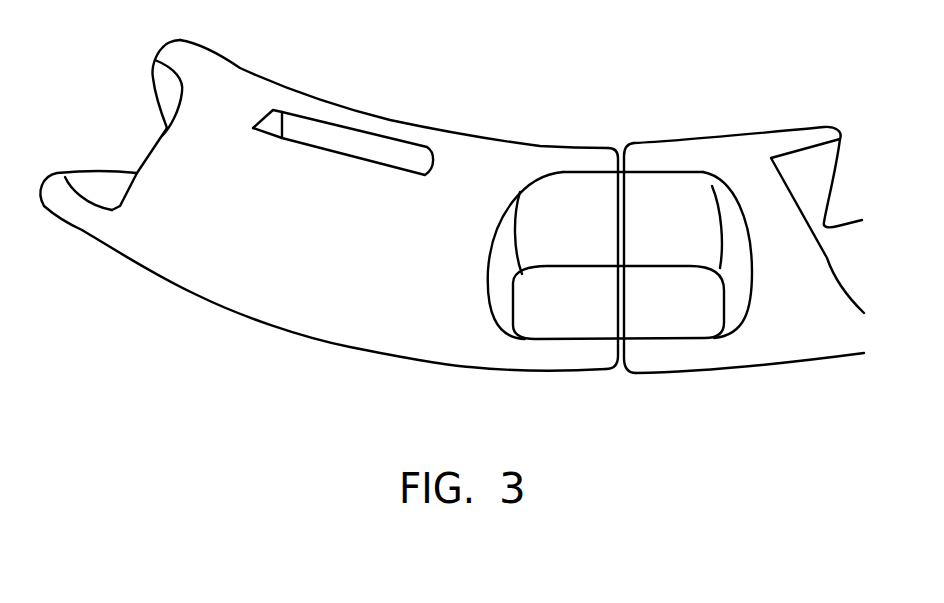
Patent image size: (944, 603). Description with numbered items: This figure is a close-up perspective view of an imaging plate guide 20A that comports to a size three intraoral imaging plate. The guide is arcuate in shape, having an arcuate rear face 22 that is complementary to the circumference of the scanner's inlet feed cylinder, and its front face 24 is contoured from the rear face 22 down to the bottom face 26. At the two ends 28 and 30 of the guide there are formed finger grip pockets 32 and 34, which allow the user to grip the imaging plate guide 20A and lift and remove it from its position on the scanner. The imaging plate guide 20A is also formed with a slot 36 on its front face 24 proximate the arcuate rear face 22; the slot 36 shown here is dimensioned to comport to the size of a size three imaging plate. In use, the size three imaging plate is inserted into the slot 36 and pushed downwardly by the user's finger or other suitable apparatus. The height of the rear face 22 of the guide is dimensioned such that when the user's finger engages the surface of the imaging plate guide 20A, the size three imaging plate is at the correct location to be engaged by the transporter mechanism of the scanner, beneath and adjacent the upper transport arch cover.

The imaging plate guide 20A is at (452, 251).
The arcuate rear face 22 is at (383, 121).
The front face 24 is at (452, 207).
The bottom face 26 is at (197, 295).
The end 28 is at (164, 47).
The end 30 is at (616, 143).
The finger grip pocket 32 is at (93, 183).
The finger grip pocket 34 is at (558, 313).
The slot 36 is at (298, 128).